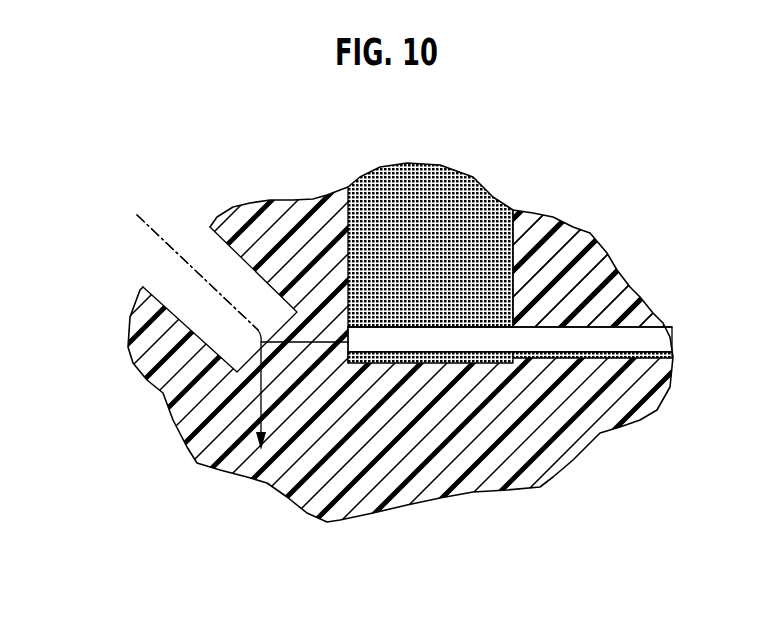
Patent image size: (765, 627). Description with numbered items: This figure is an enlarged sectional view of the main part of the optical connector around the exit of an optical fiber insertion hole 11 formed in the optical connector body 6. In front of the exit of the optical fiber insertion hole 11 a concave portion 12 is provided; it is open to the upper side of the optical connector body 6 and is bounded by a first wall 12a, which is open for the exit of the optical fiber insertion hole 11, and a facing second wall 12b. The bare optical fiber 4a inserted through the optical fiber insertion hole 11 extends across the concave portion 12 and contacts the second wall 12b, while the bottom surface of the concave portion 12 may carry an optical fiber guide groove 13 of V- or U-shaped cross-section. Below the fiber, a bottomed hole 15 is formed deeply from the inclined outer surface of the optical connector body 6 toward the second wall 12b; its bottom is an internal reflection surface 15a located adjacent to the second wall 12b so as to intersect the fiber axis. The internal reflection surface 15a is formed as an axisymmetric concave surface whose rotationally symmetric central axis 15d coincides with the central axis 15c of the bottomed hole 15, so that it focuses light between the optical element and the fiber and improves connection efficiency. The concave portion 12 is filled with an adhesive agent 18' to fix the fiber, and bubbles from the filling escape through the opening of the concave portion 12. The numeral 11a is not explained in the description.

The optical connector body 6 is at (353, 467).
The bare optical fiber 4a is at (593, 337).
The optical fiber insertion hole 11 is at (623, 353).
The surface of conductive layer 11a is at (630, 330).
The concave portion 12 is at (347, 263).
The first wall 12a is at (497, 247).
The second wall 12b is at (383, 327).
The optical fiber guide groove 13 is at (440, 352).
The bottomed hole 15 is at (163, 272).
The internal reflection surface 15a is at (240, 358).
The central axis of the bottomed hole 15c is at (127, 233).
The central axis of the internal reflection surface 15d is at (142, 272).
The adhesive agent 18' is at (430, 222).